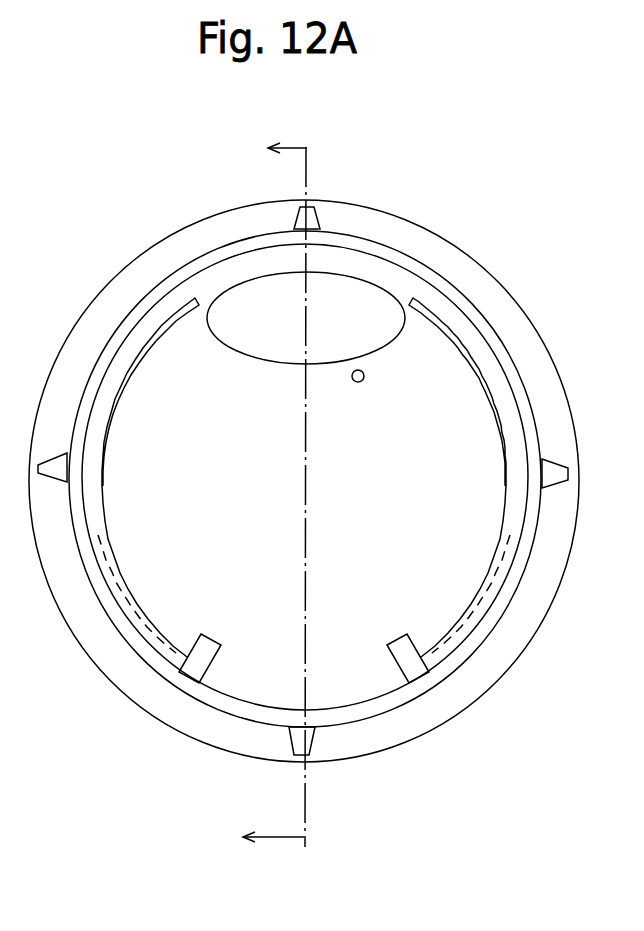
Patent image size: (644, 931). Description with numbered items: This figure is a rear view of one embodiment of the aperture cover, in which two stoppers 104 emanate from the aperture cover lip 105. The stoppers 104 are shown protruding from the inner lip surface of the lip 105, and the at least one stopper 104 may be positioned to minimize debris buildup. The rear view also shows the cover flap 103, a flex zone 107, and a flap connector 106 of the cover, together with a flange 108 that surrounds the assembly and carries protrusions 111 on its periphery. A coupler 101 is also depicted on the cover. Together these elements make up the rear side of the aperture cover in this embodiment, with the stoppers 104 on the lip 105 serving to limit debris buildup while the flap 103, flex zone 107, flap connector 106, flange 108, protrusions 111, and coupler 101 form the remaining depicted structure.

The coupler 101 is at (497, 343).
The cover flap 103 is at (315, 610).
The stopper 104 is at (195, 658).
The lip 105 is at (148, 322).
The flap connector 106 is at (402, 287).
The flex zone 107 is at (262, 315).
The flange 108 is at (380, 225).
The protrusions 111 is at (547, 472).